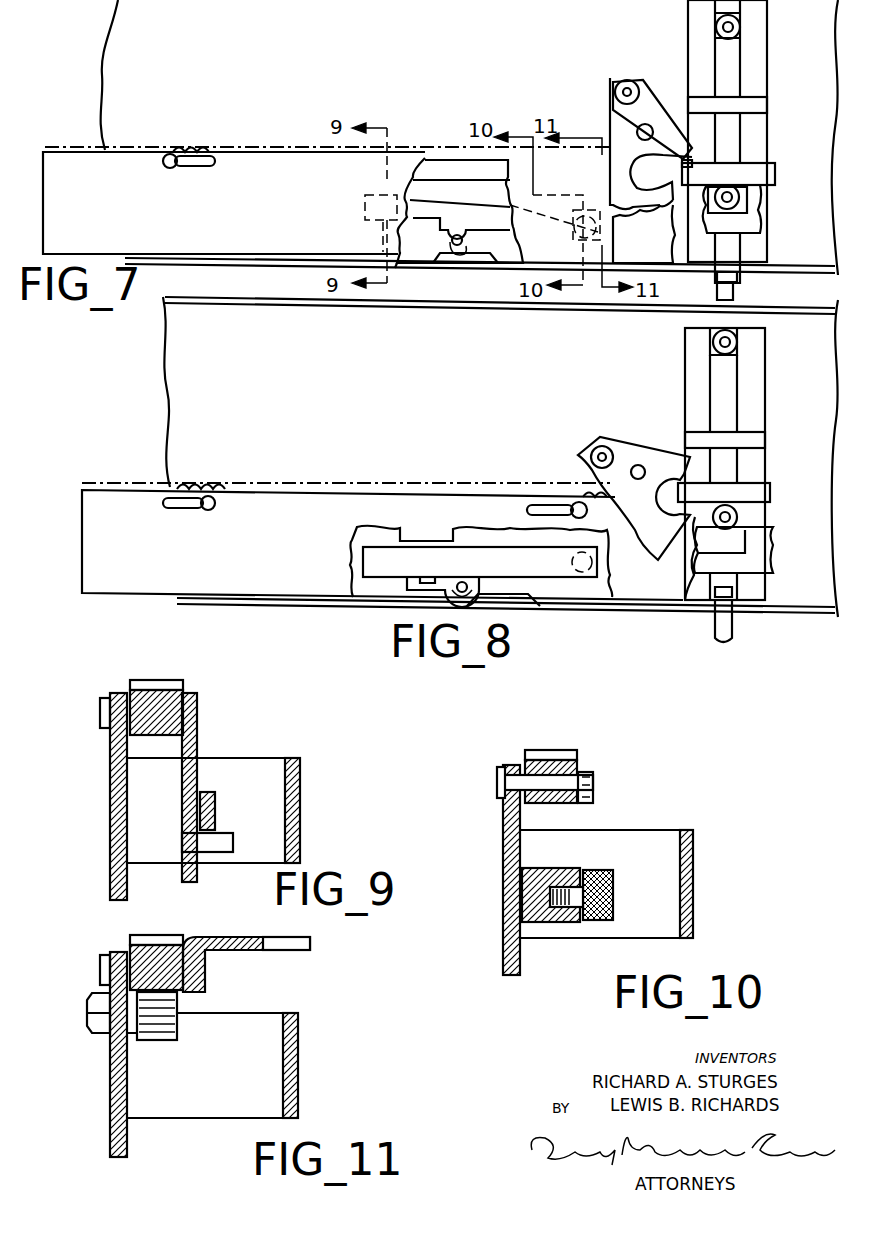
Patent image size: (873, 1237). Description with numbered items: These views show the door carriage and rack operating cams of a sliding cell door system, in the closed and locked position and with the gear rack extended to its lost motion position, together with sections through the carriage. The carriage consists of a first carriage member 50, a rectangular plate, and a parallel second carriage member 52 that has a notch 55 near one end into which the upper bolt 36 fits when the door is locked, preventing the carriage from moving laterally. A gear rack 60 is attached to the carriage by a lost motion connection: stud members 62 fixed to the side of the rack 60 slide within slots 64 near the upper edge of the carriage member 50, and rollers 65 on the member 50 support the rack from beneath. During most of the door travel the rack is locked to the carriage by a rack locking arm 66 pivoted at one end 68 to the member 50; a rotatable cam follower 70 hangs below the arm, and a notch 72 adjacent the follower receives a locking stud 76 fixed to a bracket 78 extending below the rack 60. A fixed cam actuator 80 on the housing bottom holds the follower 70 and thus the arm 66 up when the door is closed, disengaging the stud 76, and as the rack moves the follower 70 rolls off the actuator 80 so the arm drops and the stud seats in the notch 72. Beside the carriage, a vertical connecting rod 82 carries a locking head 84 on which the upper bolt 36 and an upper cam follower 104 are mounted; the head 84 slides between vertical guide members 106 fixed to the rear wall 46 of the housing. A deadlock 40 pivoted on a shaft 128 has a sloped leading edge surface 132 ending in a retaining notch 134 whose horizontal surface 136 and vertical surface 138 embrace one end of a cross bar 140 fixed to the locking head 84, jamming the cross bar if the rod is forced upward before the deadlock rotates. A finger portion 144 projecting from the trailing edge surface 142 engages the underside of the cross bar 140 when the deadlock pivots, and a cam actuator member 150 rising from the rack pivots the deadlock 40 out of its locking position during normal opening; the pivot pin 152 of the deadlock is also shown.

In FIG. 7, the upper bolt 36 is at (739, 197).
In FIG. 8, the upper bolt 36 is at (737, 517).
In FIG. 7, the deadlock 40 is at (627, 96).
In FIG. 8, the deadlock 40 is at (628, 443).
In FIG. 7, the rear wall 46 is at (506, 26).
In FIG. 8, the first carriage member 50 is at (382, 519).
In FIG. 9, the first carriage member 50 is at (112, 797).
In FIG. 11, the first carriage member 50 is at (110, 1070).
In FIG. 10, the first carriage member 50 is at (505, 862).
In FIG. 7, the second carriage member 52 is at (750, 227).
In FIG. 9, the second carriage member 52 is at (302, 810).
In FIG. 11, the second carriage member 52 is at (298, 1058).
In FIG. 10, the second carriage member 52 is at (695, 882).
In FIG. 7, the notch 55 is at (753, 205).
In FIG. 8, the notch 55 is at (770, 567).
In FIG. 8, the gear rack 60 is at (224, 487).
In FIG. 9, the gear rack 60 is at (167, 693).
In FIG. 11, the gear rack 60 is at (132, 942).
In FIG. 10, the gear rack 60 is at (563, 750).
In FIG. 7, the stud members 62 is at (189, 161).
In FIG. 8, the stud members 62 is at (213, 508).
In FIG. 9, the stud members 62 is at (102, 715).
In FIG. 10, the stud members 62 is at (567, 780).
In FIG. 8, the slots 64 is at (182, 507).
In FIG. 10, the slots 64 is at (512, 773).
In FIG. 11, the rollers 65 is at (167, 1020).
In FIG. 7, the rack locking arm 66 is at (505, 210).
In FIG. 8, the rack locking arm 66 is at (538, 572).
In FIG. 9, the rack locking arm 66 is at (213, 807).
In FIG. 10, the pivotal end 68 is at (603, 872).
In FIG. 7, the cam follower 70 is at (456, 250).
In FIG. 8, the cam follower 70 is at (462, 589).
In FIG. 8, the notch 72 is at (412, 565).
In FIG. 7, the locking stud 76 is at (396, 266).
In FIG. 8, the locking stud 76 is at (423, 562).
In FIG. 9, the locking stud 76 is at (233, 838).
In FIG. 7, the bracket 78 is at (497, 247).
In FIG. 8, the bracket 78 is at (481, 555).
In FIG. 9, the bracket 78 is at (195, 740).
In FIG. 7, the cam actuator 80 is at (490, 266).
In FIG. 8, the cam actuator 80 is at (523, 602).
In FIG. 8, the connecting rod 82 is at (733, 633).
In FIG. 7, the locking head 84 is at (730, 70).
In FIG. 7, the cam follower 104 is at (740, 27).
In FIG. 8, the cam follower 104 is at (737, 343).
In FIG. 7, the guide members 106 is at (767, 88).
In FIG. 8, the guide members 106 is at (753, 403).
In FIG. 7, the shaft 128 is at (614, 103).
In FIG. 8, the shaft 128 is at (590, 473).
In FIG. 7, the leading edge surface 132 is at (664, 96).
In FIG. 7, the retaining notch 134 is at (703, 165).
In FIG. 8, the horizontal surface 136 is at (690, 463).
In FIG. 8, the vertical surface 138 is at (688, 473).
In FIG. 7, the cross bar 140 is at (768, 172).
In FIG. 8, the cross bar 140 is at (770, 493).
In FIG. 7, the trailing edge surface 142 is at (609, 125).
In FIG. 7, the finger portion 144 is at (660, 200).
In FIG. 8, the finger portion 144 is at (703, 513).
In FIG. 11, the cam actuator member 150 is at (212, 940).
In FIG. 7, the pivot pin 152 is at (615, 82).
In FIG. 8, the pivot pin 152 is at (592, 447).